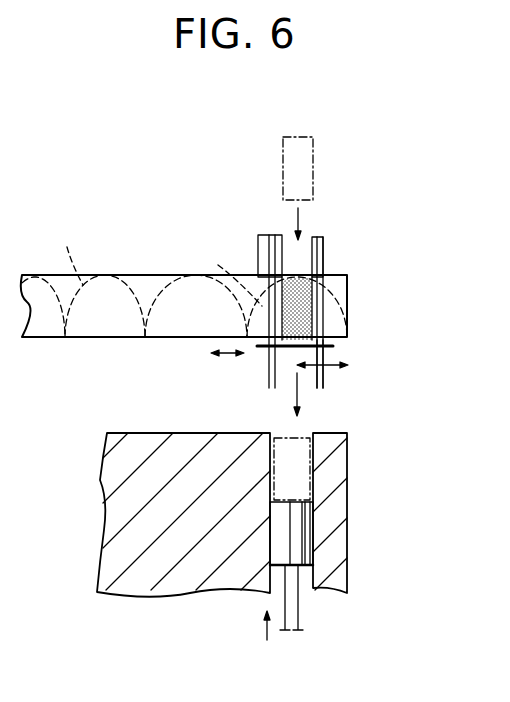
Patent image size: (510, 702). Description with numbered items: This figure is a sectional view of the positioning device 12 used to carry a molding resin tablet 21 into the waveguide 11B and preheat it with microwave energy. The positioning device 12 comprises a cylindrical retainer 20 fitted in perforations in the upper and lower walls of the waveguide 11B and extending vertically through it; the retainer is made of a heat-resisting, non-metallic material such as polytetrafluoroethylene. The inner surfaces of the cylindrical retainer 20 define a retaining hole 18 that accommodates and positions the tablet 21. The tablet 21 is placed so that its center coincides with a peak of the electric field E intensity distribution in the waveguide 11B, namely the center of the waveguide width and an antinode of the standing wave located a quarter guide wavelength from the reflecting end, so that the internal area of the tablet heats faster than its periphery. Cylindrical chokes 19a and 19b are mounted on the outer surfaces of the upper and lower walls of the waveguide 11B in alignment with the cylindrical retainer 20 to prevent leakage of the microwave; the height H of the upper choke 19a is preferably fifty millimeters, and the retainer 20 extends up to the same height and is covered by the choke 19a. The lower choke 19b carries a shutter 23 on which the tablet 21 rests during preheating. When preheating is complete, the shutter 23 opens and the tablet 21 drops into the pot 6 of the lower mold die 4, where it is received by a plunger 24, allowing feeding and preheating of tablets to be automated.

The lower mold die 4 is at (343, 507).
The pot 6 is at (309, 438).
The waveguide 11B is at (165, 275).
The positioning device 12 is at (333, 222).
The retaining hole 18 is at (311, 300).
The upper cylindrical choke 19a is at (320, 248).
The lower cylindrical choke 19b is at (322, 382).
The cylindrical retainer 20 is at (284, 235).
The tablet 21 is at (304, 160).
The shutter 23 is at (261, 347).
The plunger 24 is at (283, 528).
The height of the upper choke H is at (258, 257).
The electric field E is at (161, 263).